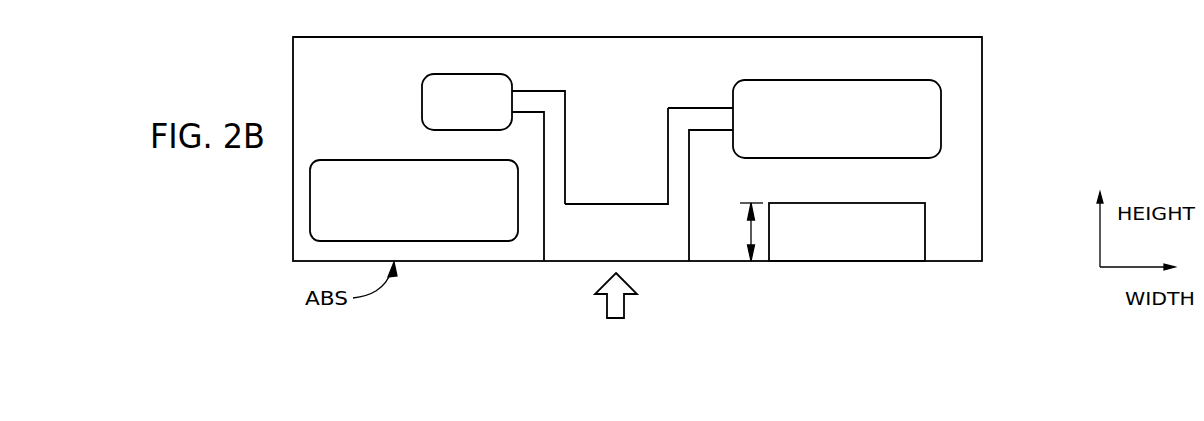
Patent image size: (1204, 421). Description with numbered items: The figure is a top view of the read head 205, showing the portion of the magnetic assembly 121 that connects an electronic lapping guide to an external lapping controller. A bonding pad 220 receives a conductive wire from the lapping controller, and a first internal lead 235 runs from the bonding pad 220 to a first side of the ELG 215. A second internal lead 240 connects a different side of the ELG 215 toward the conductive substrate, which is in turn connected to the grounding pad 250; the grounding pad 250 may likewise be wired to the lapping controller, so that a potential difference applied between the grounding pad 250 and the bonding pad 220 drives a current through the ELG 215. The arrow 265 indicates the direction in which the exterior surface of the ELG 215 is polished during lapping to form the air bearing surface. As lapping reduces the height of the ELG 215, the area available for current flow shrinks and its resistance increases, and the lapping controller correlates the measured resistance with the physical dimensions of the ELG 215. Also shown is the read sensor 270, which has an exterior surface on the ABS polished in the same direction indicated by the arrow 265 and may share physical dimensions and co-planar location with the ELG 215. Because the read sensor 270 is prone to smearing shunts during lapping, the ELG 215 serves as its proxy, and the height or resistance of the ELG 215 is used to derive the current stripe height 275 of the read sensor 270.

The magnetic assembly 121 is at (1013, 90).
The read head 205 is at (944, 68).
The ELG 215 is at (617, 203).
The bonding pad 220 is at (858, 147).
The first internal lead 235 is at (700, 107).
The second internal lead 240 is at (549, 90).
The grounding pad 250 is at (364, 159).
The arrow 265 is at (607, 304).
The read sensor 270 is at (859, 245).
The stripe height 275 is at (751, 232).